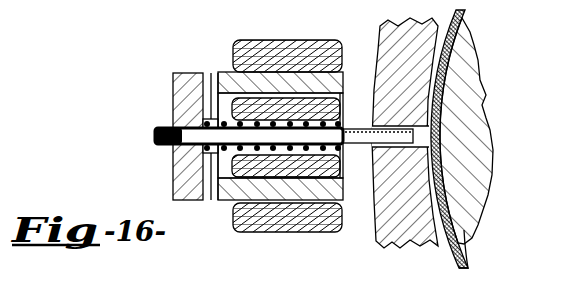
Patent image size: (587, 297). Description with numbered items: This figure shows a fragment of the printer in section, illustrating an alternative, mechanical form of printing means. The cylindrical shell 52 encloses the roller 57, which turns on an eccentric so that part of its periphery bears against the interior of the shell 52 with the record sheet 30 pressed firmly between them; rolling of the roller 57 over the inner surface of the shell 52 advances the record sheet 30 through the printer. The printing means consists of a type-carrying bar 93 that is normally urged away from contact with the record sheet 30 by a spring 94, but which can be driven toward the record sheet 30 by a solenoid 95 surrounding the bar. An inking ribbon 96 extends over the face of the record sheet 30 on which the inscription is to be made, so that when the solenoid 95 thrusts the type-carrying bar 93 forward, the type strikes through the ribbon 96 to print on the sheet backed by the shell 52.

The record sheet 30 is at (467, 259).
The cylindrical shell 52 is at (393, 235).
The roller 57 is at (470, 101).
The type-carrying bar 93 is at (360, 136).
The spring 94 is at (217, 124).
The solenoid 95 is at (257, 42).
The inking ribbon 96 is at (452, 243).